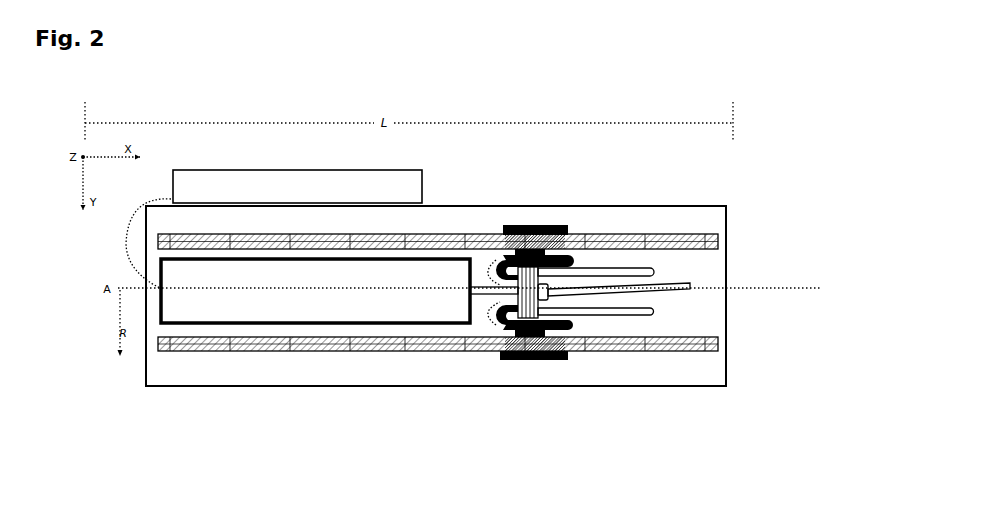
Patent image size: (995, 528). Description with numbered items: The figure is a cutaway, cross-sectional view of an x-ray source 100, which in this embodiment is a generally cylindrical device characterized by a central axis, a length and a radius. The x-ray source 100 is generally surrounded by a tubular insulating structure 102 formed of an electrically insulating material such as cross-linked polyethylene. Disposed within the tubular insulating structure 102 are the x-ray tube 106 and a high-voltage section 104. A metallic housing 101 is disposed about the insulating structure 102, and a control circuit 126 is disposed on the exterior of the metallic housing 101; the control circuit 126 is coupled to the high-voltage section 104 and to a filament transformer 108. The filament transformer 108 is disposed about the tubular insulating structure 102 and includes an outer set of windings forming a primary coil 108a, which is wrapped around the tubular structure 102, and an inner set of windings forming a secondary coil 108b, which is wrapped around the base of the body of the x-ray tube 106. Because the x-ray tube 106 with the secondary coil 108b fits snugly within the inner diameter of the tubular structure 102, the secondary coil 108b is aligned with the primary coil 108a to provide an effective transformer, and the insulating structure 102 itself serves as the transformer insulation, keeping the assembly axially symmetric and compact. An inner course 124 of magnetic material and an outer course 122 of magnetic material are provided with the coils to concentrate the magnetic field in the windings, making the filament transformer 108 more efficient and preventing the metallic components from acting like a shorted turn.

The x-ray source 100 is at (95, 452).
The metallic housing 101 is at (643, 206).
The tubular insulating structure 102 is at (670, 346).
The high-voltage section 104 is at (263, 310).
The x-ray tube 106 is at (653, 312).
The filament transformer 108 is at (573, 199).
The primary coil 108a is at (572, 231).
The secondary coil 108b is at (500, 328).
The outer course of magnetic material 122 is at (533, 362).
The inner course of magnetic material 124 is at (523, 250).
The control circuit 126 is at (293, 184).